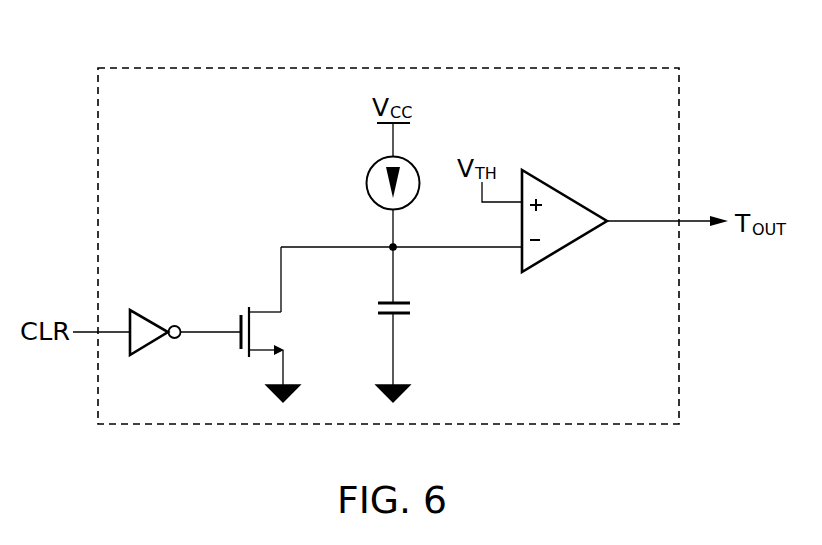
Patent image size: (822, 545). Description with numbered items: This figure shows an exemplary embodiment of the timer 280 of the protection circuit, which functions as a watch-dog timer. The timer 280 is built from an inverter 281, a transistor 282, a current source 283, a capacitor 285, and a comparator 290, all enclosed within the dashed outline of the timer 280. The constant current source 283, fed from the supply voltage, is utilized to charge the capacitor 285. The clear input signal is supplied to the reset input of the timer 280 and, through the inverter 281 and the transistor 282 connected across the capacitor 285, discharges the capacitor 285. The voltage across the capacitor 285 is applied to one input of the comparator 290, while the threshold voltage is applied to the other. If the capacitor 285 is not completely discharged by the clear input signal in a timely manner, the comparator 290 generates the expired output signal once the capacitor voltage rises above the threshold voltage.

The timer 280 is at (610, 62).
The inverter 281 is at (150, 318).
The transistor 282 is at (282, 334).
The current source 283 is at (366, 188).
The capacitor 285 is at (413, 305).
The comparator 290 is at (562, 188).